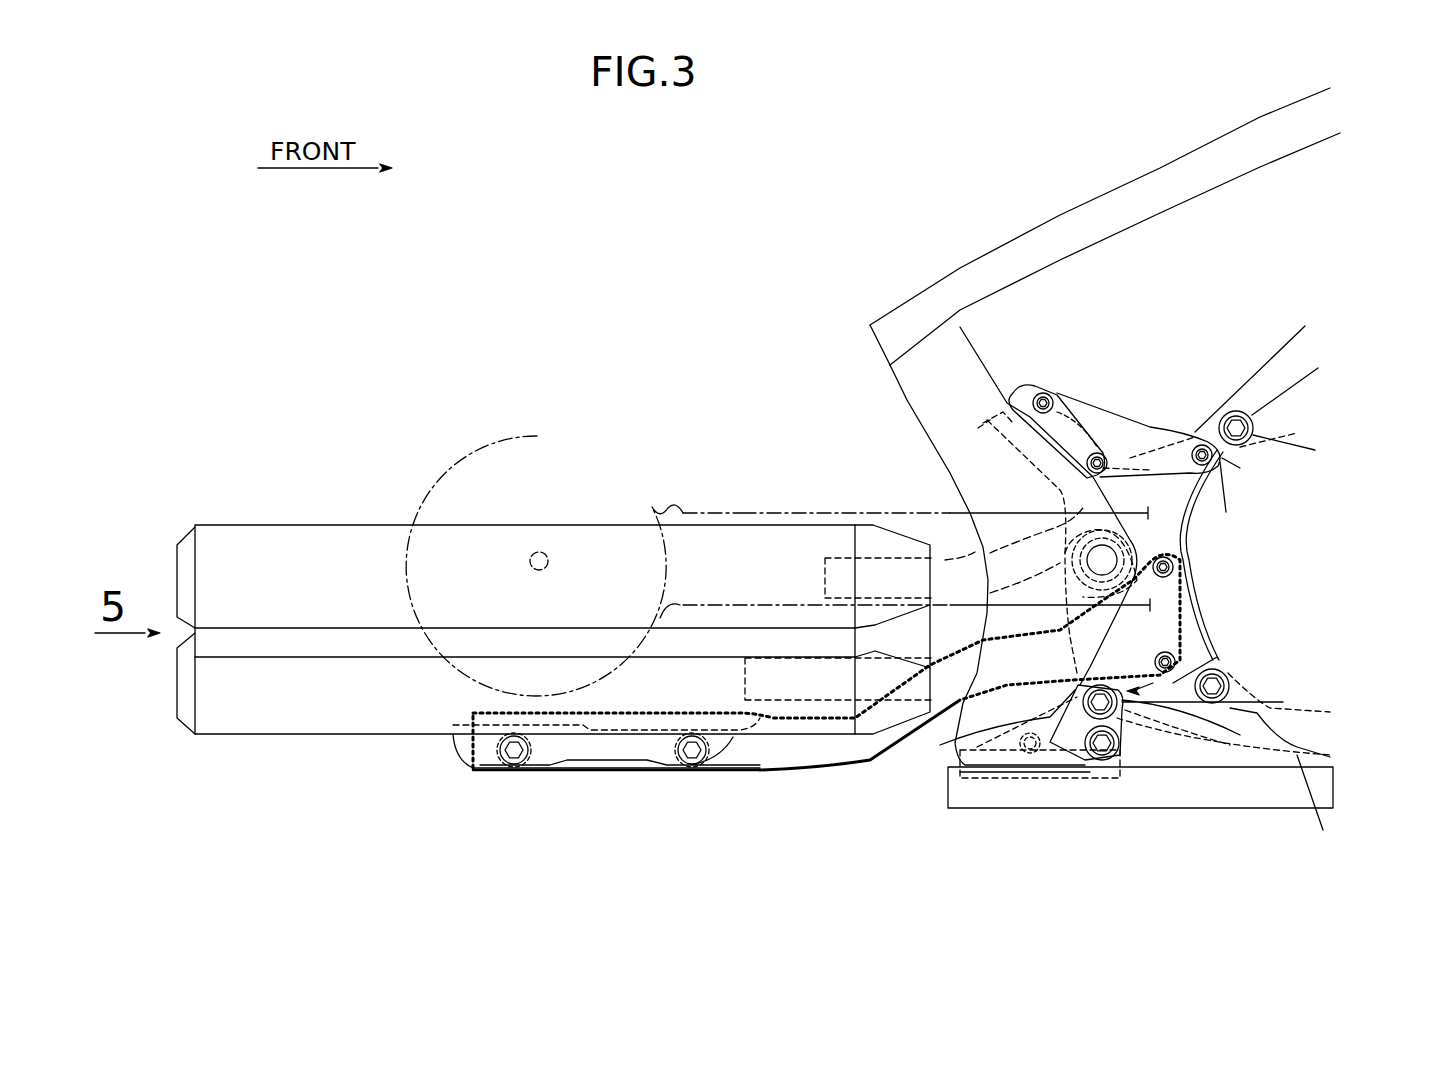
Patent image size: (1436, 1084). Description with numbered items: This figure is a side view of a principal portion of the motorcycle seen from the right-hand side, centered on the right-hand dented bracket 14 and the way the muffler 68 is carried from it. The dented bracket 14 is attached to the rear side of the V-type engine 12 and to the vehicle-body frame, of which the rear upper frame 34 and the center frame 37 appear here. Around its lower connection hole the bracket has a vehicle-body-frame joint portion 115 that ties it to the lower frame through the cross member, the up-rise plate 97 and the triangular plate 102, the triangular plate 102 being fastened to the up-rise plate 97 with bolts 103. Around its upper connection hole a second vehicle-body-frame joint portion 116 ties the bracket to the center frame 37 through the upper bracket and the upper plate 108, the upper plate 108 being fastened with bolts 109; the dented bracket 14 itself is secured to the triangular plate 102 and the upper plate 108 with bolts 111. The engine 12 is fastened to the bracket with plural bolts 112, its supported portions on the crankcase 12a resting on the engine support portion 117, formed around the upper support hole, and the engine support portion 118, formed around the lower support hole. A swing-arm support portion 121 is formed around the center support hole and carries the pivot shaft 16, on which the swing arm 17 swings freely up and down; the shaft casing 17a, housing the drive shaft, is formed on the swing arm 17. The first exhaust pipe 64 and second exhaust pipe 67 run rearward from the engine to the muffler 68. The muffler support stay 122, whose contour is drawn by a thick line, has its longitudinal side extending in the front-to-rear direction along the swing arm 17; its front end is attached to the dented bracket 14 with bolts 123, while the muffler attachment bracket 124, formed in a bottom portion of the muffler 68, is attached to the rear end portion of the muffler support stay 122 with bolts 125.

The V-type engine 12 is at (1330, 474).
The crankcase 12a is at (1327, 424).
The dented bracket 14 is at (1180, 522).
The pivot shaft 16 is at (1150, 543).
The swing arm 17 is at (503, 428).
The shaft casing 17a is at (742, 512).
The rear upper frame 34 is at (1085, 222).
The center frame 37 is at (918, 406).
The first exhaust pipe 64 is at (1323, 830).
The second exhaust pipe 67 is at (1255, 410).
The muffler 68 is at (336, 540).
The up-rise plate 97 is at (878, 772).
The triangular plate 102 is at (1123, 723).
The bolt 103 is at (1037, 752).
The upper plate 108 is at (1143, 417).
The bolt 109 is at (1043, 393).
The bolt 111 is at (1202, 445).
The bolt 112 is at (1240, 420).
The vehicle-body-frame joint portion 115 is at (1217, 657).
The vehicle-body-frame joint portion 116 is at (1228, 456).
The engine support portion 117 is at (1219, 400).
The engine support portion 118 is at (1190, 712).
The swing-arm support portion 121 is at (1150, 598).
The muffler support stay 122 is at (852, 782).
The bolt 123 is at (1183, 568).
The muffler attachment bracket 124 is at (603, 752).
The bolt 125 is at (512, 772).